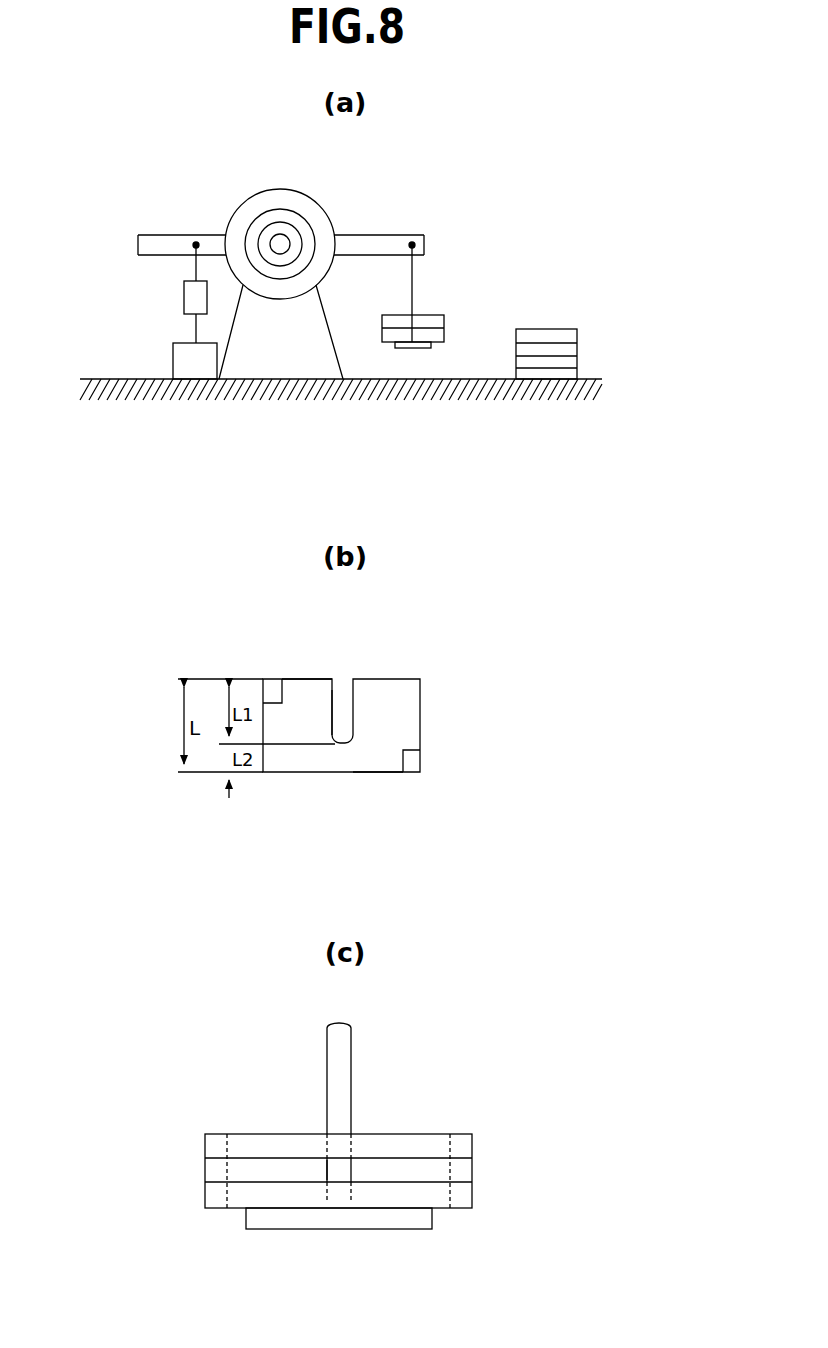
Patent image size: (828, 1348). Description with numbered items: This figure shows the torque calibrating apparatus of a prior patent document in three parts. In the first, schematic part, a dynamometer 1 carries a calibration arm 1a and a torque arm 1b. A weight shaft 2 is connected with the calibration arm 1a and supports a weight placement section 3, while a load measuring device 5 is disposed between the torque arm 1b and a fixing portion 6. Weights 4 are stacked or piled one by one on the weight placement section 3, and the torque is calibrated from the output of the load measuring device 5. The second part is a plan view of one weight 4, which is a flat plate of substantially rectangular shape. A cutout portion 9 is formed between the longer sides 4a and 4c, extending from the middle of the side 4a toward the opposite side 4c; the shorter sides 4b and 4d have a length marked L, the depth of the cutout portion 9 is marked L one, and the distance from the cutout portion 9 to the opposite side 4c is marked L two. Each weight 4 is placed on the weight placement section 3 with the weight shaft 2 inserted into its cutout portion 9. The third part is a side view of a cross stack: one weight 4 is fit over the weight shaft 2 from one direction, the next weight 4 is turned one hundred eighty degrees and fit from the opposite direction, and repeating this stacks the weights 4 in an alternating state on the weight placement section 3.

The dynamometer 1 is at (302, 196).
The calibration arm 1a is at (378, 238).
The torque arm 1b is at (182, 243).
The weight shaft 2 is at (415, 287).
The weight placement section 3 is at (413, 344).
The weight 4 is at (443, 320).
The side 4a is at (307, 678).
The side 4b is at (262, 690).
The side 4c is at (360, 770).
The side 4d is at (420, 720).
The load measuring device 5 is at (193, 297).
The fixing portion 6 is at (182, 358).
The cutout portion 9 is at (342, 695).